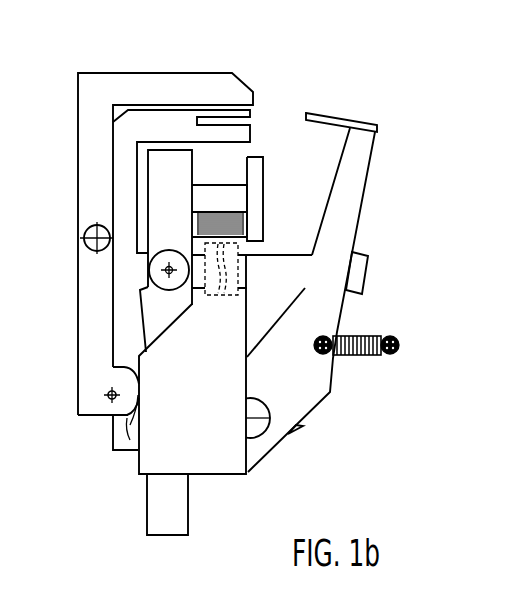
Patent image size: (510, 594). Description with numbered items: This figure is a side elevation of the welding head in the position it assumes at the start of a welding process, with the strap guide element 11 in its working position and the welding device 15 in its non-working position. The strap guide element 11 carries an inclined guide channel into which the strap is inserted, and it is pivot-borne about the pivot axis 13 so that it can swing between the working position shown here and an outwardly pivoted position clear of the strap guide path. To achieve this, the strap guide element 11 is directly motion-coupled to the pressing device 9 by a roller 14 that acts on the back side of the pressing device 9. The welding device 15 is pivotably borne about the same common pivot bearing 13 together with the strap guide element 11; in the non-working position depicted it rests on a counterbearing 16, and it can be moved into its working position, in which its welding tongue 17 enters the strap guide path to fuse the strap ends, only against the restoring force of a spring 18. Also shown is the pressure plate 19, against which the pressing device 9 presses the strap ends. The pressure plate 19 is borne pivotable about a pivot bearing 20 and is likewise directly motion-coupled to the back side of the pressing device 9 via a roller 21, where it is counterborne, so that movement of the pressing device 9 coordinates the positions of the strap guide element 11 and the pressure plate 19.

The pressing device 9 is at (210, 457).
The strap guide element 11 is at (156, 120).
The pivot axis 13 is at (255, 428).
The roller 14 is at (169, 250).
The welding device 15 is at (363, 173).
The counterbearing 16 is at (367, 275).
The welding tongue 17 is at (326, 118).
The spring 18 is at (367, 358).
The pressure plate 19 is at (203, 88).
The pivot bearing 20 is at (85, 229).
The roller 21 is at (130, 425).